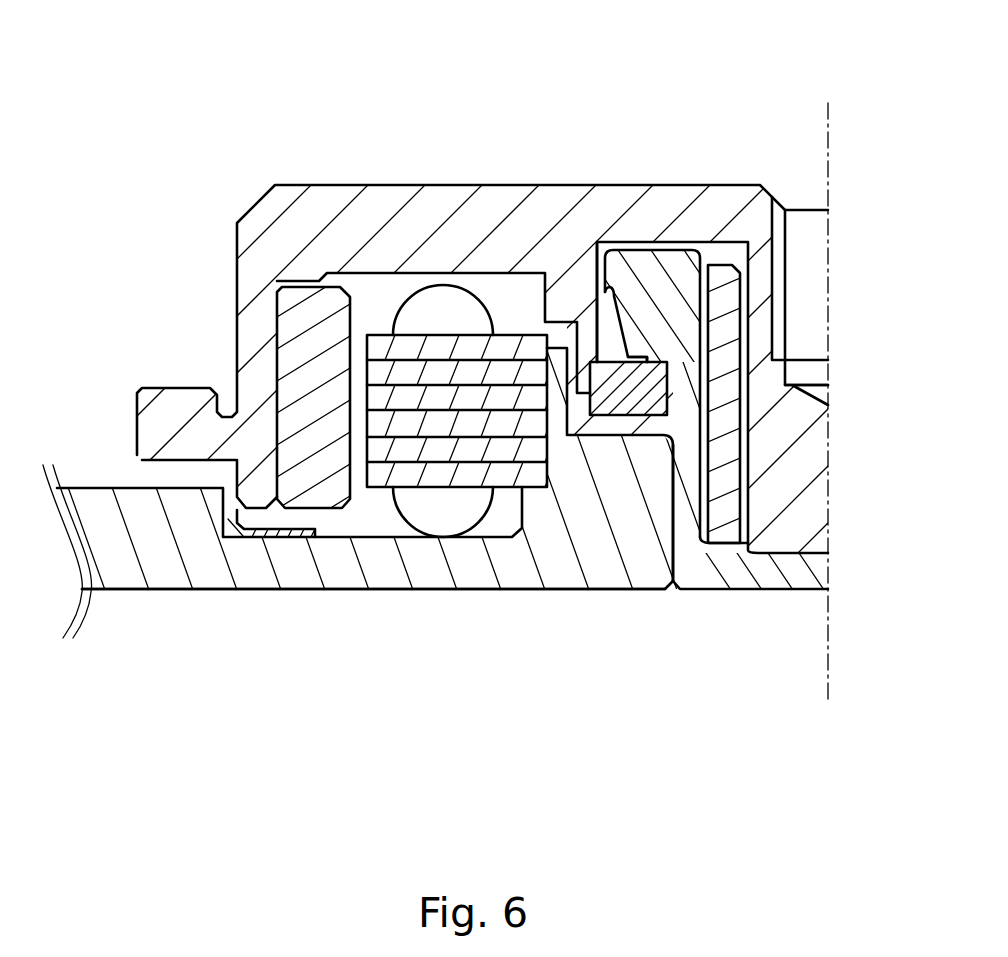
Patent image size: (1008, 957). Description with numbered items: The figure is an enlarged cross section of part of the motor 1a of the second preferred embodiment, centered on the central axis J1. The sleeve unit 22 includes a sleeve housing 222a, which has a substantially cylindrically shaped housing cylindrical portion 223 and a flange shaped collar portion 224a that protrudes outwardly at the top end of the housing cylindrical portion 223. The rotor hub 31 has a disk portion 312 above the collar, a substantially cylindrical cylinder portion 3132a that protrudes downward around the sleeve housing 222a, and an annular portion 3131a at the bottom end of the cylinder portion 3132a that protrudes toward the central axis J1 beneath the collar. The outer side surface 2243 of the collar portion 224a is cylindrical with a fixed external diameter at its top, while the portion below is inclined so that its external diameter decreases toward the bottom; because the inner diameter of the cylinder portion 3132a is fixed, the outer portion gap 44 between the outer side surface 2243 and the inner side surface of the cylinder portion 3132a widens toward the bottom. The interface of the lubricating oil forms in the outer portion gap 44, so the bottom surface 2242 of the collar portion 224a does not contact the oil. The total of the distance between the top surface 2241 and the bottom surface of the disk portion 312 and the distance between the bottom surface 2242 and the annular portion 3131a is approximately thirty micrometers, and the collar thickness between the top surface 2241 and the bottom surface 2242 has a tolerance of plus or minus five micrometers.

The motor 1a is at (238, 152).
The sleeve unit 22 is at (588, 728).
The sleeve housing 222a is at (669, 673).
The housing cylindrical portion 223 is at (688, 527).
The collar portion 224a is at (632, 275).
The top surface 2241 is at (623, 247).
The bottom surface 2242 is at (648, 360).
The outer side surface 2243 is at (603, 276).
The rotor hub 31 is at (770, 80).
The disk portion 312 is at (710, 222).
The outer portion gap 44 is at (616, 292).
The annular portion 3131a is at (622, 385).
The cylinder portion 3132a is at (600, 350).
The central axis J1 is at (828, 108).